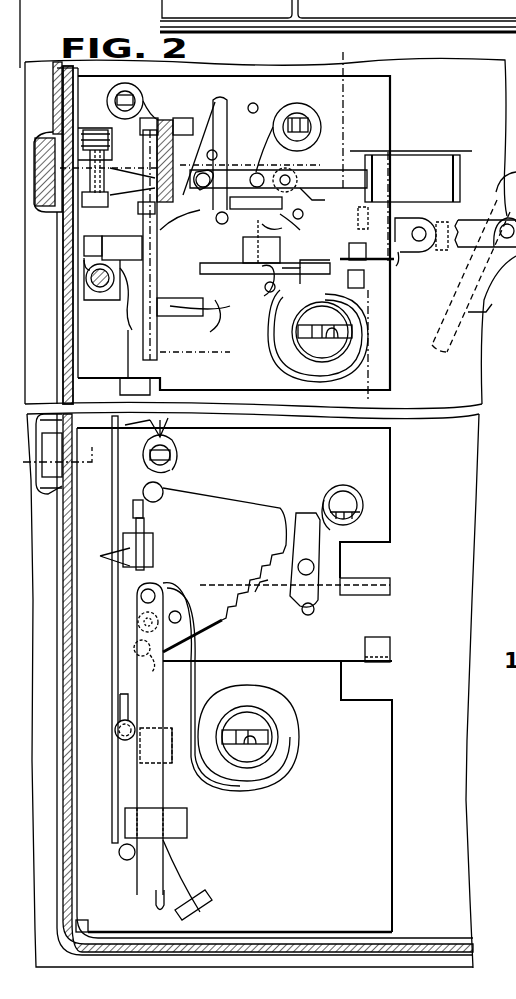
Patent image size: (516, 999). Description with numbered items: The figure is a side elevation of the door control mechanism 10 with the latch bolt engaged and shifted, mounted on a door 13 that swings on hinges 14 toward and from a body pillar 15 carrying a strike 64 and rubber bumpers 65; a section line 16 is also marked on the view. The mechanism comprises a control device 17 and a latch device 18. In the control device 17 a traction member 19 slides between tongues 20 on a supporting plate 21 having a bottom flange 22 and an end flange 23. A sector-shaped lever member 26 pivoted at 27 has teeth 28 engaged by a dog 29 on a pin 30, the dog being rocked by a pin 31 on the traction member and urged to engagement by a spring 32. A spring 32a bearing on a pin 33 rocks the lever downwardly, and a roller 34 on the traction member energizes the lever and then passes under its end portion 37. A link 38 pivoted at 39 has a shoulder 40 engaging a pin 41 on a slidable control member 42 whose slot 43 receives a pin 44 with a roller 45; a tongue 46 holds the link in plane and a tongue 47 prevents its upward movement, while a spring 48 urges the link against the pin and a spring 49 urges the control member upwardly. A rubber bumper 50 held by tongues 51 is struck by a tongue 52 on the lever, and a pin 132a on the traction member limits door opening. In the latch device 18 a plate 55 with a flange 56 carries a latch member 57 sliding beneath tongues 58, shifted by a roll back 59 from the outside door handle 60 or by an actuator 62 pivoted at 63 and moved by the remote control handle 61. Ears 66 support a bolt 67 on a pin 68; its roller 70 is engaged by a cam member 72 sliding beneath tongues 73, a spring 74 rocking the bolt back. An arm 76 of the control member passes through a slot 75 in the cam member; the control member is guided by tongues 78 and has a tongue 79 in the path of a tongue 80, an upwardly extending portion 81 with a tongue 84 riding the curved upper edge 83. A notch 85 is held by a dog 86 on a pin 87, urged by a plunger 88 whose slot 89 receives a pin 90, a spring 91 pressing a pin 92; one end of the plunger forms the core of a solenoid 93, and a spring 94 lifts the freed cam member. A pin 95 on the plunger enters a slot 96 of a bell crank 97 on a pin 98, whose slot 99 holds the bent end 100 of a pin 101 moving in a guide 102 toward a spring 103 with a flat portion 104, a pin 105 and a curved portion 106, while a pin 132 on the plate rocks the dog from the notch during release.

The door control mechanism 10 is at (412, 503).
The door 13 is at (468, 548).
The hinge 14 is at (476, 142).
The body pillar 15 is at (38, 74).
The section line 16 is at (350, 56).
The control device 17 is at (390, 480).
The latch device 18 is at (379, 363).
The traction member 19 is at (40, 404).
The tongue 20 is at (380, 576).
The supporting plate 21 is at (380, 798).
The bottom flange 22 is at (276, 925).
The end flange 23 is at (74, 855).
The lever member 26 is at (232, 502).
The pivot 27 is at (163, 486).
The teeth 28 is at (252, 597).
The dog 29 is at (300, 508).
The pin 30 is at (314, 562).
The pin 31 is at (308, 615).
The spring 32 is at (352, 487).
The spring 32a is at (292, 730).
The pin 33 is at (180, 612).
The roller 34 is at (137, 608).
The end portion 37 is at (163, 672).
The link 38 is at (163, 796).
The pivot 39 is at (153, 592).
The shoulder 40 is at (172, 873).
The pin 41 is at (127, 860).
The control member 42 is at (112, 803).
The slot 43 is at (120, 696).
The pin 44 is at (115, 736).
The roller 45 is at (118, 710).
The tongue 46 is at (168, 762).
The tongue 47 is at (187, 822).
The spring 48 is at (195, 894).
The spring 49 is at (180, 460).
The rubber bumper 50 is at (144, 545).
The tongues 51 is at (105, 557).
The tongue 52 is at (153, 550).
The plate 55 is at (378, 92).
The flange 56 is at (73, 318).
The latch member 57 is at (394, 250).
The tongues 58 is at (366, 247).
The roll back 59 is at (86, 280).
The outside door handle 60 is at (207, 315).
The remote control handle 61 is at (474, 288).
The actuator 62 is at (470, 228).
The pivot 63 is at (422, 240).
The strike 64 is at (48, 136).
The bumpers 65 is at (48, 470).
The ears 66 is at (112, 140).
The bolt 67 is at (135, 210).
The pin 68 is at (96, 132).
The roller 70 is at (110, 176).
The cam member 72 is at (187, 316).
The tongues 73 is at (183, 118).
The spring 74 is at (100, 172).
The slot 75 is at (195, 353).
The arm 76 is at (223, 321).
The tongues 78 is at (135, 382).
The tongue 79 is at (125, 308).
The tongue 80 is at (100, 252).
The upwardly extending portion 81 is at (157, 248).
The curved upper edge 83 is at (110, 236).
The tongue 84 is at (122, 248).
The notch 85 is at (161, 222).
The dog 86 is at (212, 98).
The pin 87 is at (226, 148).
The plunger 88 is at (237, 171).
The slot 89 is at (221, 180).
The pin 90 is at (231, 223).
The spring 91 is at (312, 108).
The pin 92 is at (262, 174).
The solenoid 93 is at (428, 175).
The spring 94 is at (145, 94).
The pin 95 is at (290, 176).
The slot 96 is at (317, 195).
The bell crank 97 is at (303, 214).
The pin 98 is at (306, 225).
The slot 99 is at (285, 233).
The bent end 100 is at (256, 203).
The pin 101 is at (260, 268).
The guide 102 is at (243, 250).
The spring 103 is at (302, 276).
The flat portion 104 is at (328, 266).
The pin 105 is at (262, 292).
The curved portion 106 is at (288, 281).
The pin 132 is at (256, 104).
The pin 132a is at (134, 648).